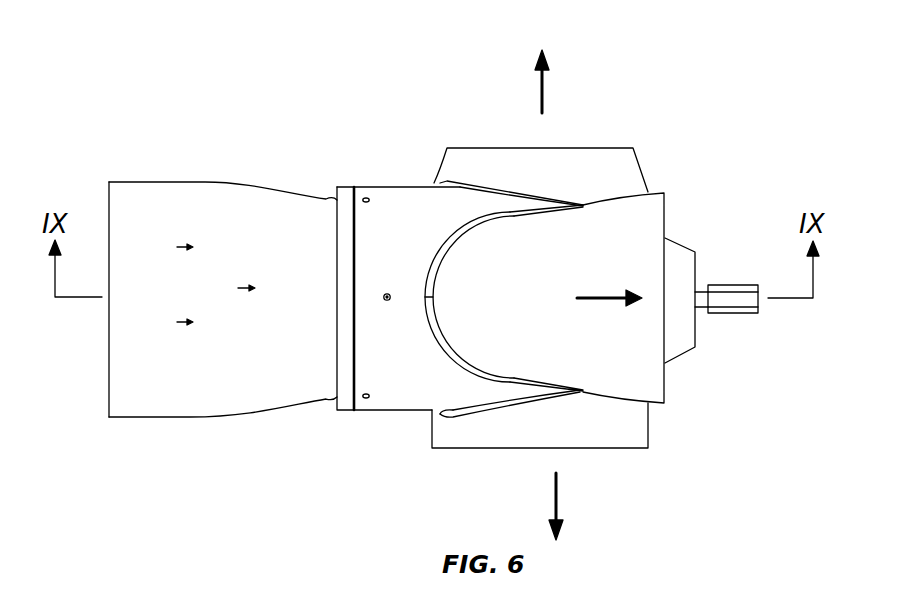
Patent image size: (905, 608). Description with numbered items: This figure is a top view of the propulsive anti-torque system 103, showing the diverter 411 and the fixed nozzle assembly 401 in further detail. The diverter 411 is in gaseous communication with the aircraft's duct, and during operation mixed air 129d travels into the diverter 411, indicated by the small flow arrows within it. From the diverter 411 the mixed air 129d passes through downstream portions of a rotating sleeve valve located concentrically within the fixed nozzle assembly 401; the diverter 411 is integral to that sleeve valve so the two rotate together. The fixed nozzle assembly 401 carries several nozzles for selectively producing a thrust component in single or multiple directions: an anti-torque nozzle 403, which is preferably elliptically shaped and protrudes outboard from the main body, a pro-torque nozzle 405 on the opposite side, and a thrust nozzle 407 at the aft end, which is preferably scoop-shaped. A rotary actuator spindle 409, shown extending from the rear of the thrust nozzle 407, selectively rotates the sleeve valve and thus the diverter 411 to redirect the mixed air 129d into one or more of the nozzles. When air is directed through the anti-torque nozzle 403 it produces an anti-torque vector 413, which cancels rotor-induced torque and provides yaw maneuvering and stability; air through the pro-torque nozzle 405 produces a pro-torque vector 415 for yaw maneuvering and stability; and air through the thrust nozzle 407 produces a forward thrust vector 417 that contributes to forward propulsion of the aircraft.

The propulsive anti-torque system 103 is at (235, 84).
The mixed air 129d is at (177, 322).
The fixed nozzle assembly 401 is at (381, 184).
The anti-torque nozzle 403 is at (600, 448).
The pro-torque nozzle 405 is at (575, 148).
The thrust nozzle 407 is at (665, 227).
The rotary actuator spindle 409 is at (723, 313).
The diverter 411 is at (218, 185).
The anti-torque vector 413 is at (553, 507).
The pro-torque vector 415 is at (545, 97).
The forward thrust vector 417 is at (600, 298).